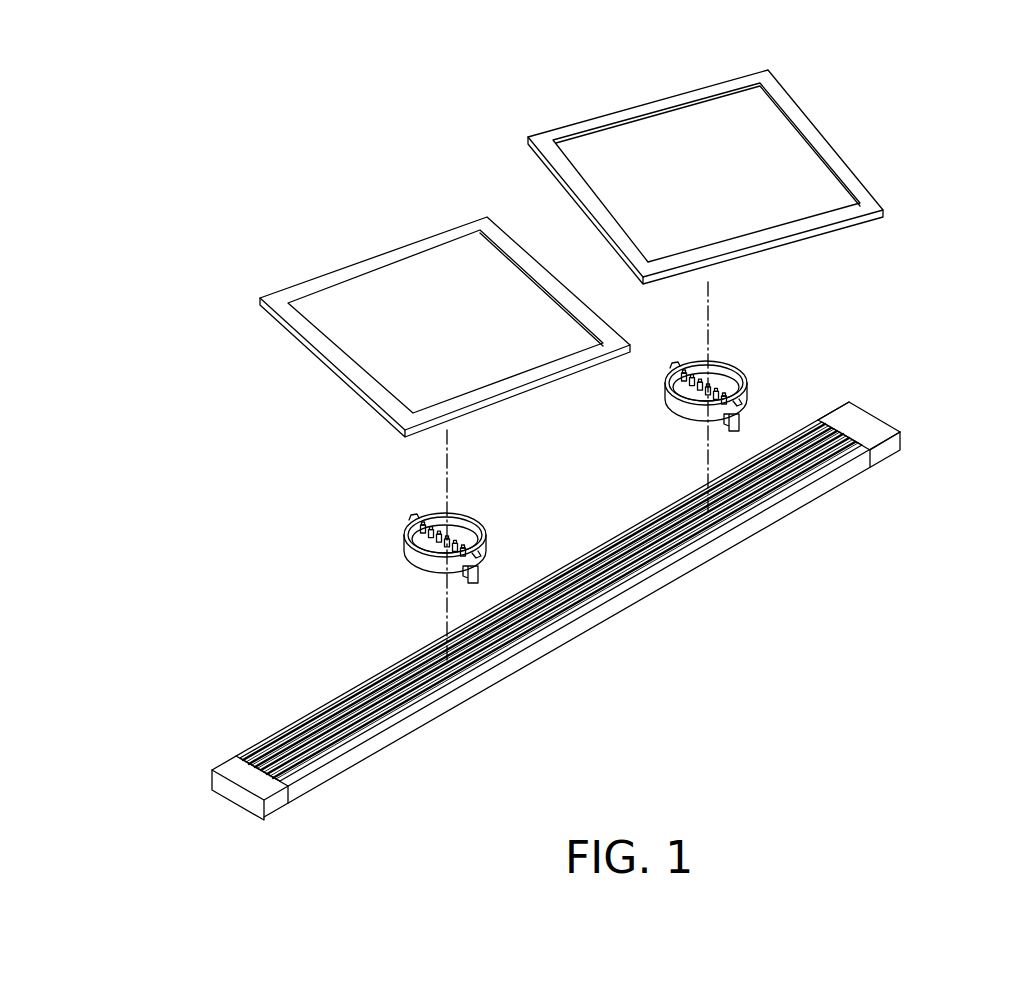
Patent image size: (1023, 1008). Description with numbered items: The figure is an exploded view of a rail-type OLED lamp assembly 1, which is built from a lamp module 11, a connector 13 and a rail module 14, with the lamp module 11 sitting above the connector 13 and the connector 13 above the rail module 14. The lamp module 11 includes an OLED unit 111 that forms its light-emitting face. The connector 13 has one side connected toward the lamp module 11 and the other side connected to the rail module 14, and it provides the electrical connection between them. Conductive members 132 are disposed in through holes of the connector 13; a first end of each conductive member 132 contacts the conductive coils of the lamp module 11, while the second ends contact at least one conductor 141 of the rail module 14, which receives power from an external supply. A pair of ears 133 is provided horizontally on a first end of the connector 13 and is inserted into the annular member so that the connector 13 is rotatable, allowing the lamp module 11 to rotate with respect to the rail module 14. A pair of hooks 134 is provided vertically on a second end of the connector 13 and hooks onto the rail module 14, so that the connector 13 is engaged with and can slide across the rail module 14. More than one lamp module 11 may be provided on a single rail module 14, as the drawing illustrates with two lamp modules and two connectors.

The rail-type OLED lamp assembly 1 is at (122, 103).
The lamp module 11 is at (416, 325).
The OLED unit 111 is at (328, 300).
The connector 13 is at (435, 532).
The conductive member 132 is at (427, 532).
The pair of ears 133 is at (480, 552).
The pair of hooks 134 is at (482, 567).
The rail module 14 is at (606, 599).
The conductor 141 is at (873, 433).